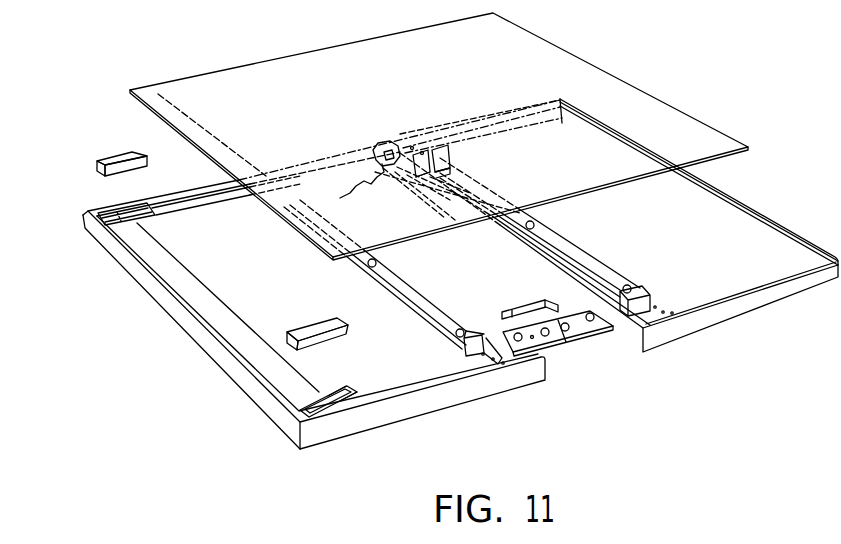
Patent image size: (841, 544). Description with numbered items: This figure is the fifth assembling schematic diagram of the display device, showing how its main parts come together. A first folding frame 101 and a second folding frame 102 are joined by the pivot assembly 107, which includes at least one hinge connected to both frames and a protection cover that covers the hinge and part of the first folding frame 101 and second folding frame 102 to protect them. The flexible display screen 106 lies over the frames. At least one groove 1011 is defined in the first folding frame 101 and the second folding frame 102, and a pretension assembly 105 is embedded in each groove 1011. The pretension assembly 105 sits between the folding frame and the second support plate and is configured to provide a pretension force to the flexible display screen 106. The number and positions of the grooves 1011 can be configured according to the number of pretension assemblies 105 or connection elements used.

The first folding frame 101 is at (232, 278).
The second folding frame 102 is at (727, 232).
The pretension assembly 105 is at (127, 158).
The flexible display screen 106 is at (332, 80).
The pivot assembly 107 is at (562, 346).
The groove 1011 is at (107, 215).